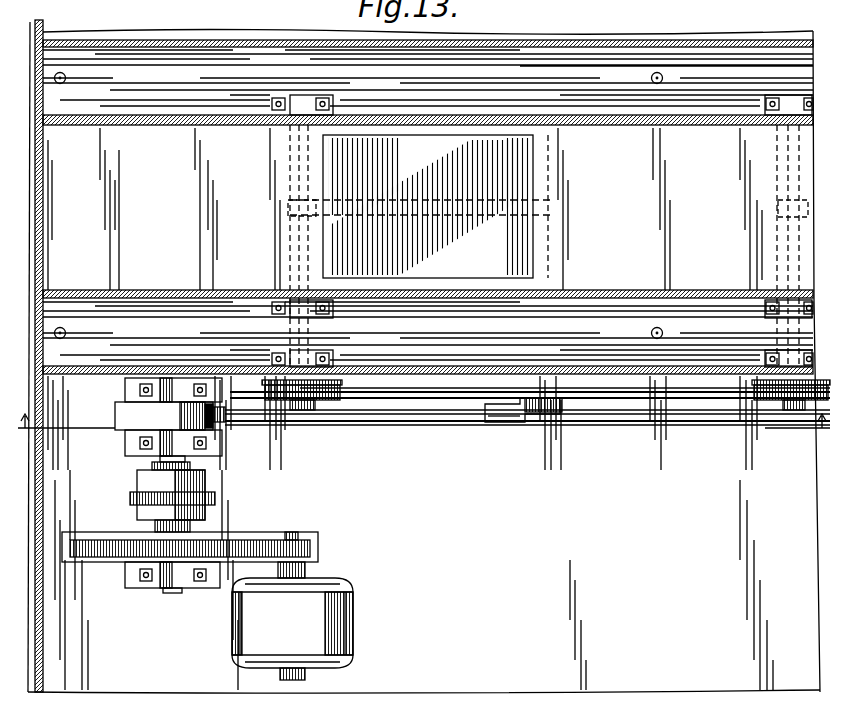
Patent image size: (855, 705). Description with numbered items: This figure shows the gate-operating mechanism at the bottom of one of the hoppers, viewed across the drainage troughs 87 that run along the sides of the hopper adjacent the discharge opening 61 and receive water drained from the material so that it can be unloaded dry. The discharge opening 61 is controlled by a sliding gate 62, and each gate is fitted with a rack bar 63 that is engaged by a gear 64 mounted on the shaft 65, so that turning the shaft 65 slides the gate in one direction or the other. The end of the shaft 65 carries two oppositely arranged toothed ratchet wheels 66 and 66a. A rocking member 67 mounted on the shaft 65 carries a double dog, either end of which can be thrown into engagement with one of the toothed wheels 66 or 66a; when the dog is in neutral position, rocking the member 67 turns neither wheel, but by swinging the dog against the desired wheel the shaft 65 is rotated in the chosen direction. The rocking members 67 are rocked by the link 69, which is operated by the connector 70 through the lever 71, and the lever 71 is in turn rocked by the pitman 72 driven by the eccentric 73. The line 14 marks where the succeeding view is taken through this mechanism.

The drainage trough 87 is at (630, 62).
The discharge opening 61 is at (462, 138).
The sliding gate 62 is at (448, 252).
The rack bar 63 is at (368, 218).
The gear 64 is at (282, 220).
The shaft 65 is at (288, 258).
The toothed ratchet wheel 66 is at (268, 386).
The toothed ratchet wheel 66a is at (290, 404).
The rocking member 67 is at (345, 368).
The link 69 is at (418, 368).
The connector 70 is at (503, 402).
The lever 71 is at (565, 406).
The pitman 72 is at (415, 420).
The eccentric 73 is at (150, 404).
The section line 14 is at (425, 435).